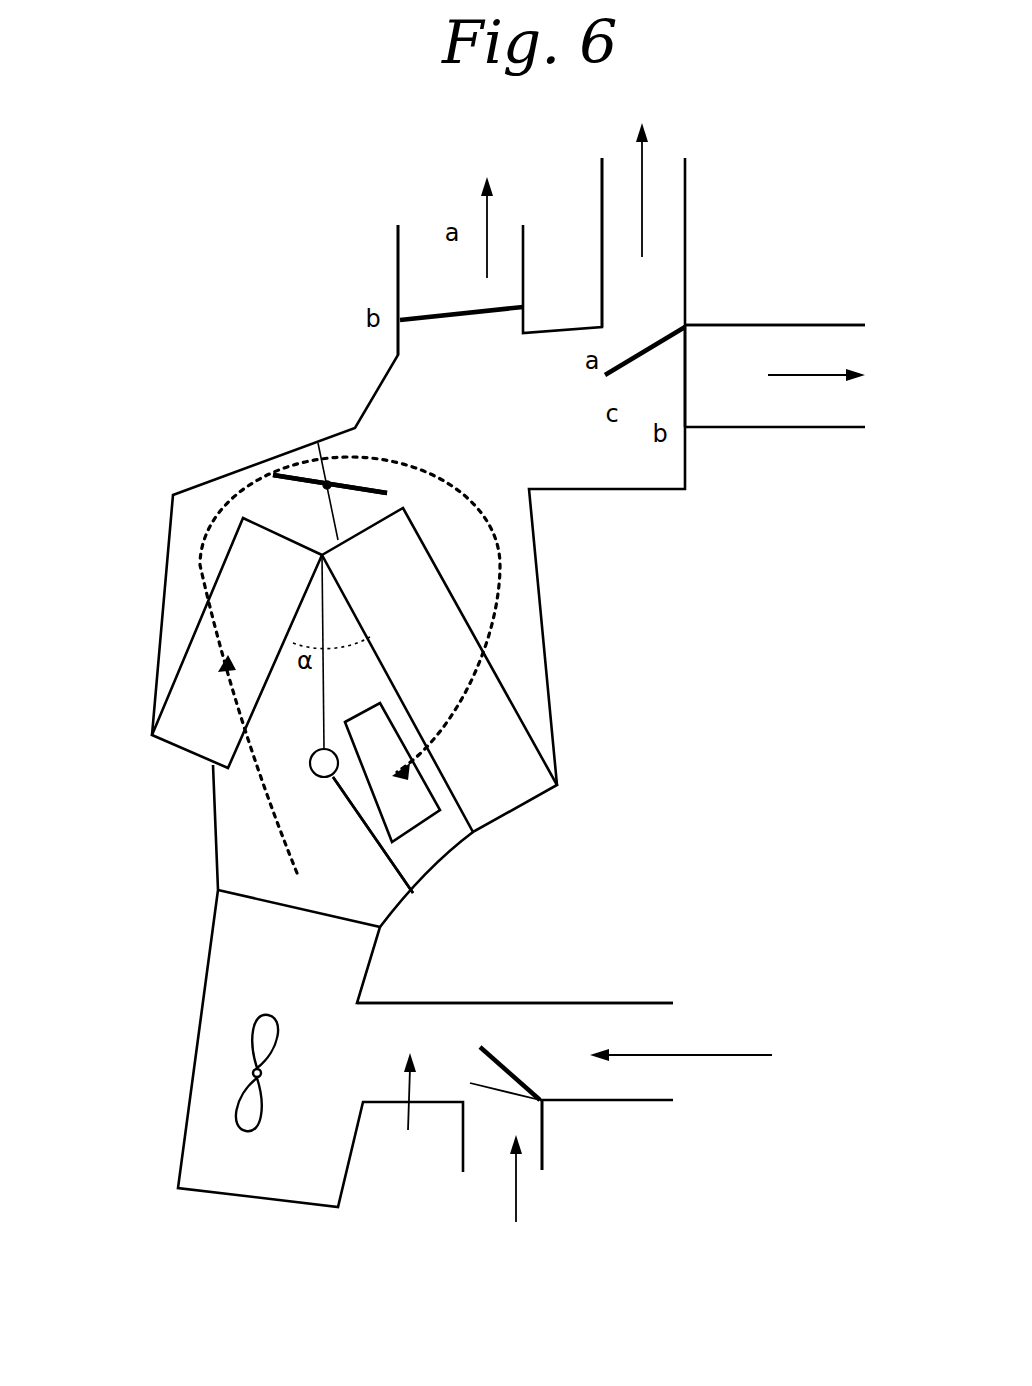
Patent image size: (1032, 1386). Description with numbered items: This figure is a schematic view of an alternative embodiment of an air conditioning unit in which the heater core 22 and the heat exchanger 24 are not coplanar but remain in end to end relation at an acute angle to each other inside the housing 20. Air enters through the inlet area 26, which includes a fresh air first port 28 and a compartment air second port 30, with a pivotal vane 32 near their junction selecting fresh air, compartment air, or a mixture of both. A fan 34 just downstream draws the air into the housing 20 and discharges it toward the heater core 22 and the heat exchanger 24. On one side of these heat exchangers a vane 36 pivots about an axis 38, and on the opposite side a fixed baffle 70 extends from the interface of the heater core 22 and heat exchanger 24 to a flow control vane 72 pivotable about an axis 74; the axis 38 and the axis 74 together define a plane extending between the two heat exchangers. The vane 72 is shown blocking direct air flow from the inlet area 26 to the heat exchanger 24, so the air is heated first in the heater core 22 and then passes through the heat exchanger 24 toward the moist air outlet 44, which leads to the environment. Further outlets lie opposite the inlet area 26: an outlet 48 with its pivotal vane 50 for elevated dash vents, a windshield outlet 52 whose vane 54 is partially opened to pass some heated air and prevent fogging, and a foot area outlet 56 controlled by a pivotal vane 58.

The housing 20 is at (536, 551).
The heater core 22 is at (237, 626).
The heat exchanger 24 is at (425, 671).
The inlet area 26 is at (407, 1130).
The first port 28 is at (543, 1147).
The second port 30 is at (593, 1013).
The pivotal vane 32 is at (513, 1073).
The fan 34 is at (240, 1090).
The vane 36 is at (362, 490).
The axis 38 is at (318, 445).
The moist air outlet 44 is at (407, 798).
The outlet 48 is at (397, 270).
The pivotal vane 50 is at (455, 312).
The windshield outlet 52 is at (602, 208).
The vane 54 is at (610, 370).
The outlet 56 is at (840, 323).
The pivotal vane 58 is at (688, 377).
The fixed baffle 70 is at (325, 700).
The flow control vane 72 is at (397, 863).
The axis 74 is at (311, 768).